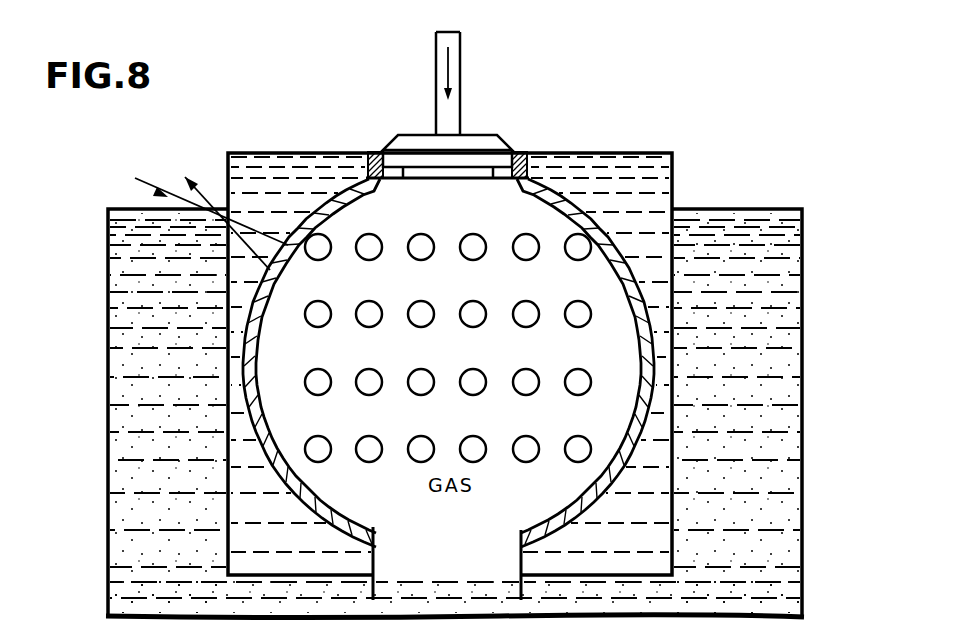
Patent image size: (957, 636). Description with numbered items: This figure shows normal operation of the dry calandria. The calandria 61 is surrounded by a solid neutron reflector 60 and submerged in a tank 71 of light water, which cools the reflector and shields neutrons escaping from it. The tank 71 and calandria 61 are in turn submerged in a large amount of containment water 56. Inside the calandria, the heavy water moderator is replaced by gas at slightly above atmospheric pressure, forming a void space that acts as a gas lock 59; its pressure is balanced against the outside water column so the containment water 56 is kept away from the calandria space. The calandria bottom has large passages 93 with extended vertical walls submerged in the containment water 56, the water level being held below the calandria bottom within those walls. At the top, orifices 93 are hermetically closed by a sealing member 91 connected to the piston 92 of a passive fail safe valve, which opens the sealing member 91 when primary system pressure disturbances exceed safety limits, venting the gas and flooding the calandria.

The containment water 56 is at (718, 208).
The tank 71 is at (616, 153).
The solid neutron reflector 60 is at (266, 374).
The calandria 61 is at (358, 170).
The sealing member 91 is at (498, 139).
The piston 92 is at (436, 76).
The orifices 93 is at (466, 180).
The gas lock 59 is at (465, 568).